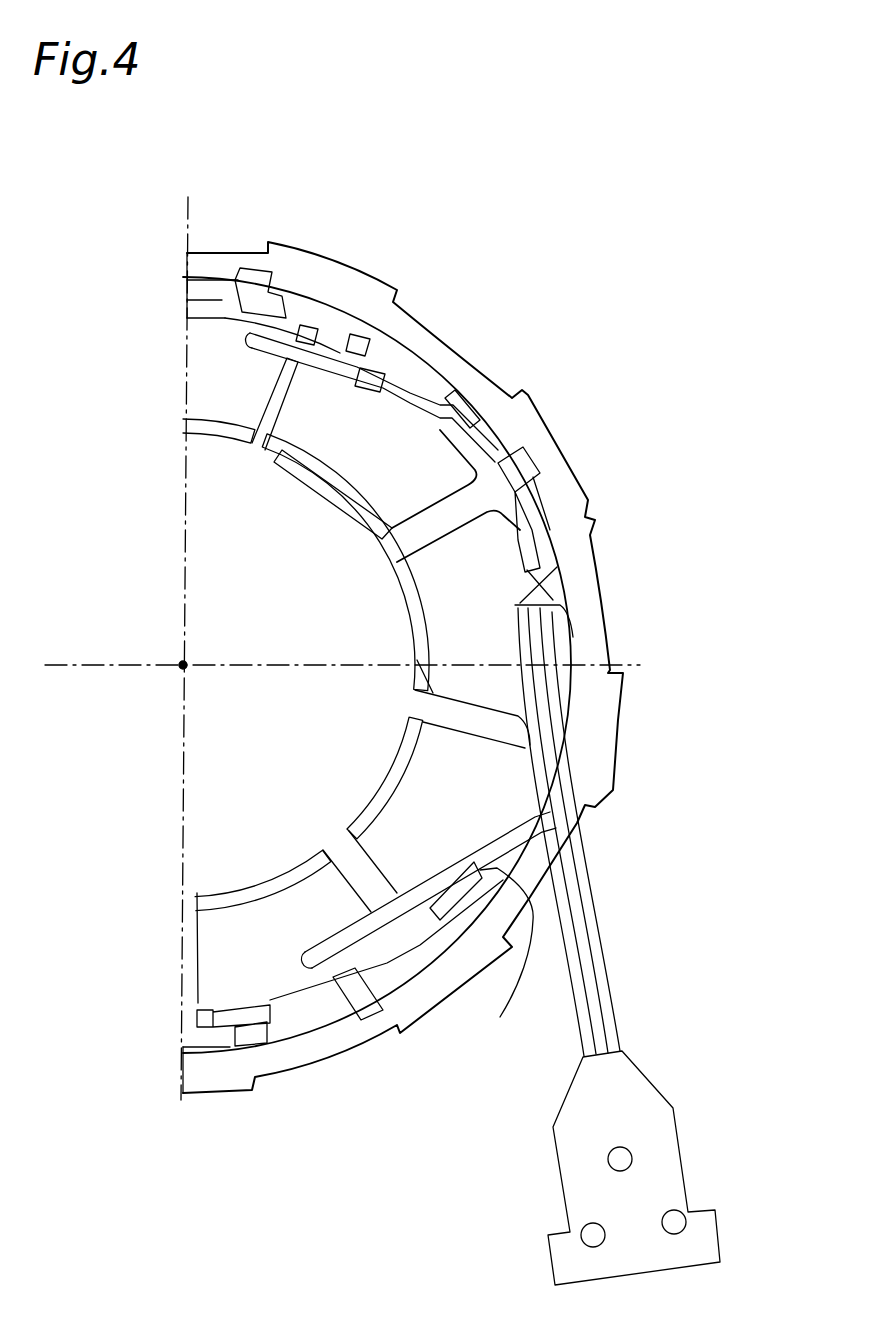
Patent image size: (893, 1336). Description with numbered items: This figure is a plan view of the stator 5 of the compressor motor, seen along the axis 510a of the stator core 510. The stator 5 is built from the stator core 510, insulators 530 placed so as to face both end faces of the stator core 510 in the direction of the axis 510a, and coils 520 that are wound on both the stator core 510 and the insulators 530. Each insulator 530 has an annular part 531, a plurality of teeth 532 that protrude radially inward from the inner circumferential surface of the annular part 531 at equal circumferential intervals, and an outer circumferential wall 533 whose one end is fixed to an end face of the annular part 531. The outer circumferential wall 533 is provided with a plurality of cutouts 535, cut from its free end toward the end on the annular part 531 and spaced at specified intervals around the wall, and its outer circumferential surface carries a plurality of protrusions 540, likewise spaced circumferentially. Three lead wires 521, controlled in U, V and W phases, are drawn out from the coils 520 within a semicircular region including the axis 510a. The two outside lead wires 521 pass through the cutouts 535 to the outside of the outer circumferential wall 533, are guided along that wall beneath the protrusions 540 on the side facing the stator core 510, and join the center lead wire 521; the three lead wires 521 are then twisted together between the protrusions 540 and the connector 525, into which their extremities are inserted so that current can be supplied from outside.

The stator 5 is at (222, 220).
The stator core 510 is at (305, 255).
The axis 510a is at (181, 668).
The coil 520 is at (448, 597).
The lead wire 521 is at (268, 445).
The connector 525 is at (577, 1168).
The insulator 530 is at (420, 360).
The annular part 531 is at (318, 315).
The tooth 532 is at (310, 465).
The outer circumferential wall 533 is at (367, 337).
The cutout 535 is at (442, 368).
The protrusion 540 is at (540, 447).